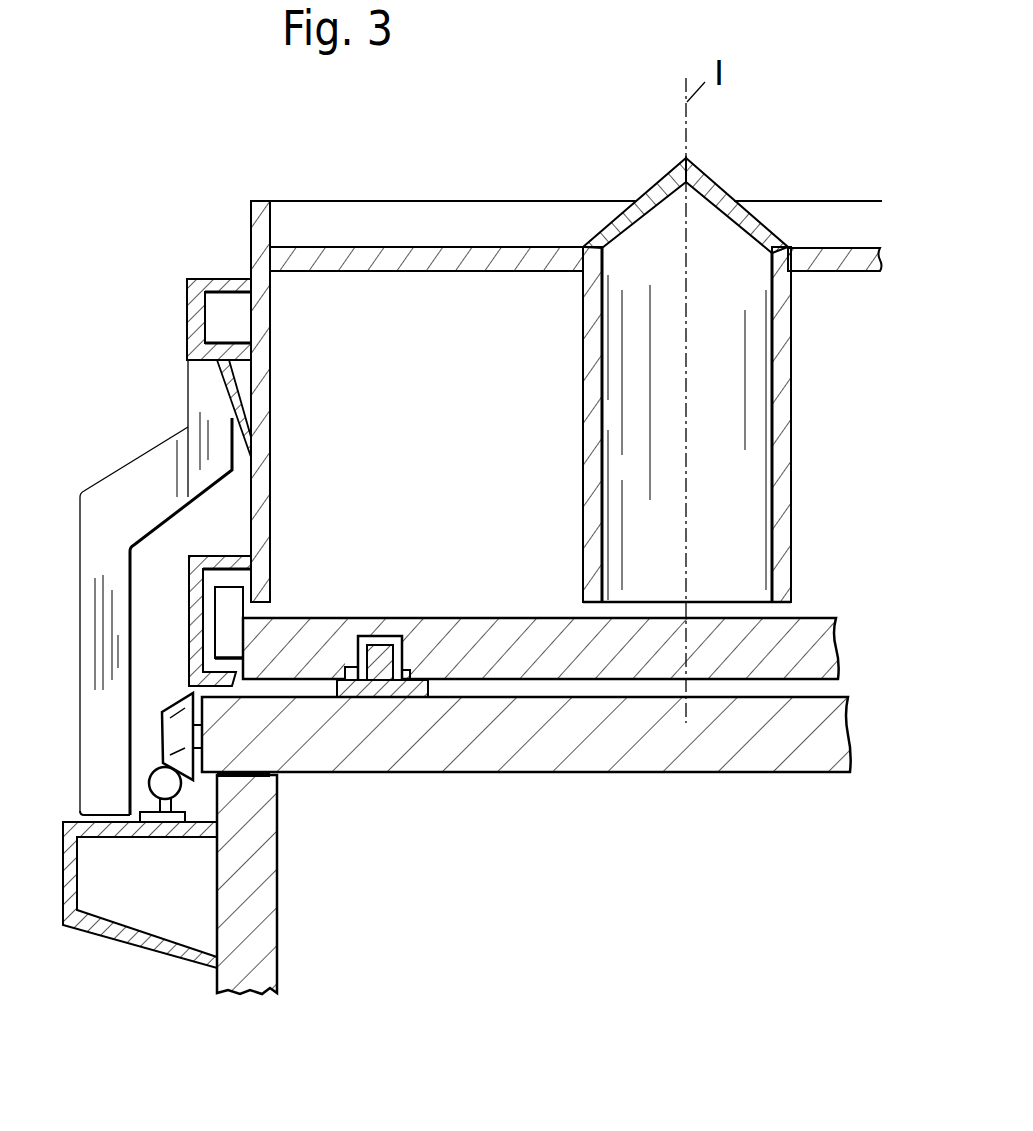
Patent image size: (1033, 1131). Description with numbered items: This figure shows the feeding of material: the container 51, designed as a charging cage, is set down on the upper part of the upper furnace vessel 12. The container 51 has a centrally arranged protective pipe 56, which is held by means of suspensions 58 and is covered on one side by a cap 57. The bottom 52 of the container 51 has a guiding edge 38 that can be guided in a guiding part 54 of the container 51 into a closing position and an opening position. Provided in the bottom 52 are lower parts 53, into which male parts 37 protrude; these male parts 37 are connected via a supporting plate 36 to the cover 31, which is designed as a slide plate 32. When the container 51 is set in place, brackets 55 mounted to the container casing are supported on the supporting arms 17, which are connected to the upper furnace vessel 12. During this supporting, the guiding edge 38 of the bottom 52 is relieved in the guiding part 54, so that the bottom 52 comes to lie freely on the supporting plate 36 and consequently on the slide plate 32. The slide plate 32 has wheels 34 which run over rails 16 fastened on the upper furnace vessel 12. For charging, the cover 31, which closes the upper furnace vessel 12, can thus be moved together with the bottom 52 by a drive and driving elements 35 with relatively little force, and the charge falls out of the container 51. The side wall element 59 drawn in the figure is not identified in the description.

The upper furnace vessel 12 is at (250, 937).
The rails 16 is at (160, 780).
The supporting arms 17 is at (103, 558).
The cover 31 is at (526, 879).
The slide plate 32 is at (617, 753).
The wheels 34 is at (180, 718).
The driving elements 35 is at (372, 645).
The supporting plate 36 is at (410, 690).
The male parts 37 is at (381, 655).
The guiding edge 38 is at (189, 508).
The container 51 is at (511, 200).
The bottom 52 is at (520, 645).
The lower parts 53 is at (346, 700).
The guiding part 54 is at (192, 557).
The brackets 55 is at (195, 300).
The protective pipe 56 is at (750, 424).
The cap 57 is at (723, 203).
The suspensions 58 is at (335, 265).
The side wall 59 is at (262, 240).